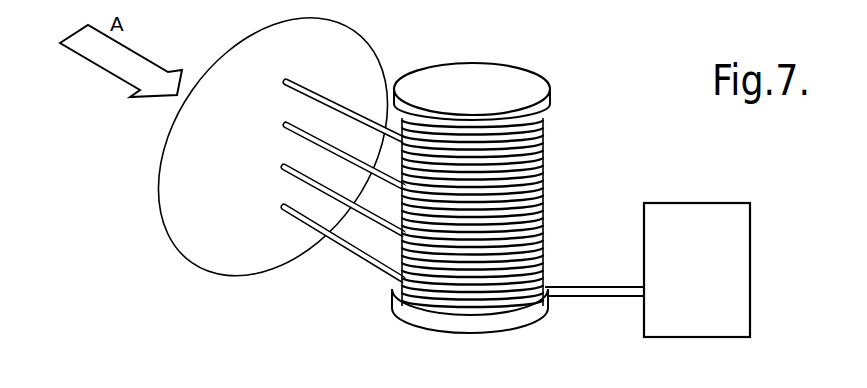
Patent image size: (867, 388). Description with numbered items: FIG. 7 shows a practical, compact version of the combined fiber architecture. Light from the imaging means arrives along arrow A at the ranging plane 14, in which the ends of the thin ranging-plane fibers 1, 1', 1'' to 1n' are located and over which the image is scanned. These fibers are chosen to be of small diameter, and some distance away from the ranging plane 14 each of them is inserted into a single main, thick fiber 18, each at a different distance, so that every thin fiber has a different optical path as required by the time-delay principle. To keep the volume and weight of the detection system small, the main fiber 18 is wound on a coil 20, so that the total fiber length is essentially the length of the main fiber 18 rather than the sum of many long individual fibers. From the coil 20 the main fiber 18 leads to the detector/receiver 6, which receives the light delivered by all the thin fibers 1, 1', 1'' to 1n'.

The thin ranging-plane fiber 1 is at (327, 106).
The thin ranging-plane fiber 1' is at (324, 153).
The thin ranging-plane fiber 1'' is at (322, 197).
The thin ranging-plane fiber 1n' is at (319, 238).
The ranging plane 14 is at (208, 262).
The coil 20 is at (527, 77).
The main fiber 18 is at (578, 297).
The detector/receiver 6 is at (704, 279).